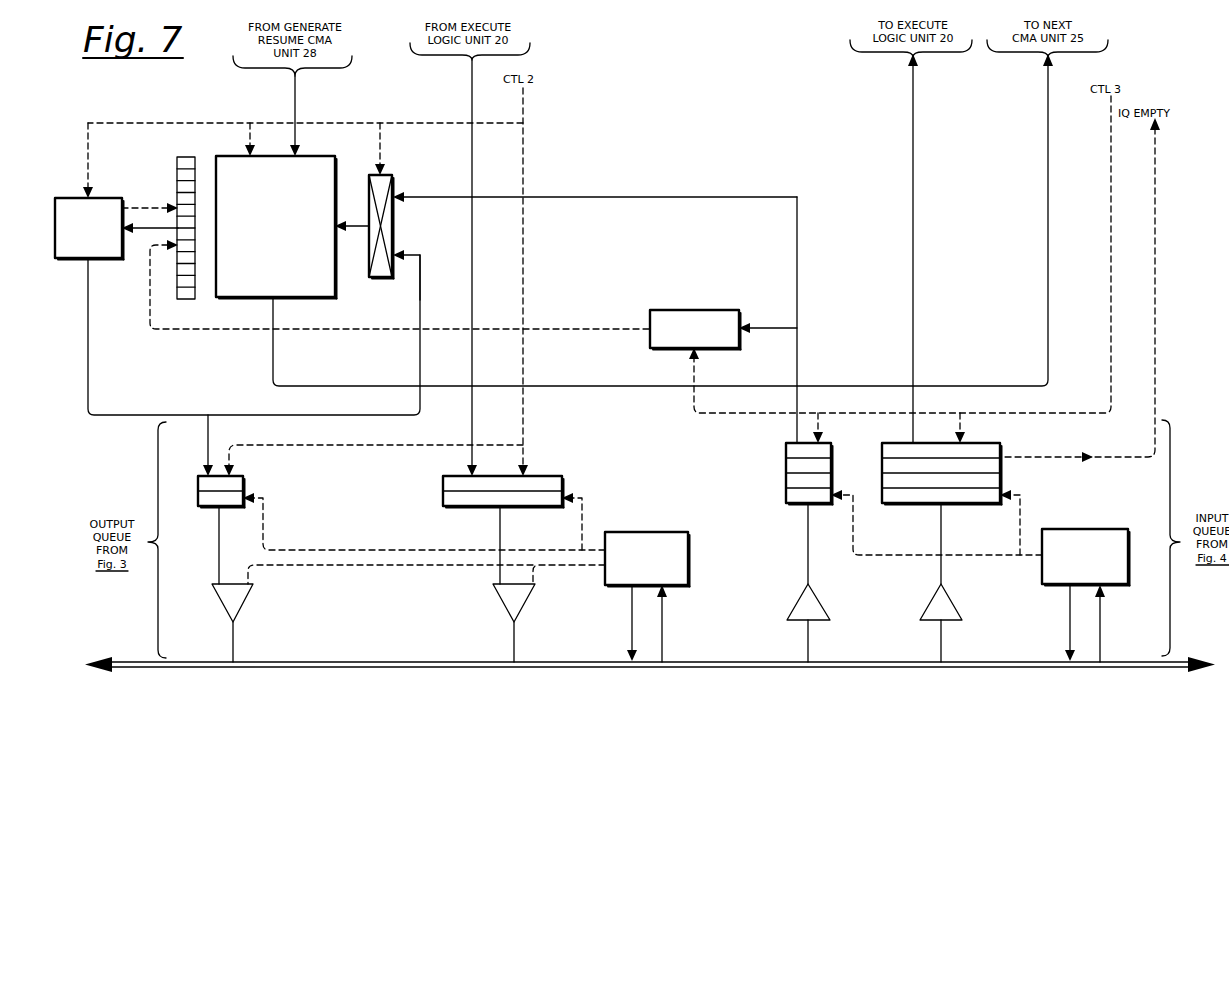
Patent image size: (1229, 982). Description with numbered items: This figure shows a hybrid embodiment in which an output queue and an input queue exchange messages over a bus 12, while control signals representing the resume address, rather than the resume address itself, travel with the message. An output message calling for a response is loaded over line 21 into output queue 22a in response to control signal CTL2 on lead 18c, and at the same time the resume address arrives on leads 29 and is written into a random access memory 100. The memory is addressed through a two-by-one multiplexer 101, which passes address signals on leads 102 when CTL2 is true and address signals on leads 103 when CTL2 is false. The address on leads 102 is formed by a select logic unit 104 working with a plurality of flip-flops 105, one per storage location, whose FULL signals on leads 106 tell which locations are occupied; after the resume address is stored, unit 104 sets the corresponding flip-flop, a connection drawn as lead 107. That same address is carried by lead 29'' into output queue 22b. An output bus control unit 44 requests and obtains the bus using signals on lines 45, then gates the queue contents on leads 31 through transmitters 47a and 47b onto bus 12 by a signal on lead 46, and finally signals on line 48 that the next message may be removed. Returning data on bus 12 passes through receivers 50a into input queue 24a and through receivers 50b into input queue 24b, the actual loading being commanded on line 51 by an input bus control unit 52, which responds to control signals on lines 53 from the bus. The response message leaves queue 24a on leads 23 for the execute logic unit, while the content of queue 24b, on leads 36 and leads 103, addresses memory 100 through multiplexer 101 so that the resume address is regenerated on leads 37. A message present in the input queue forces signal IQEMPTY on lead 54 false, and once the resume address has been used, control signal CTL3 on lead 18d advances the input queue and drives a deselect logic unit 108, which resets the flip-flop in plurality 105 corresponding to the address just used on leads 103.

The leads 29 is at (281, 116).
The line from execute logic unit 21 is at (472, 110).
The lead 18c is at (523, 112).
The leads 23 is at (913, 115).
The leads 37 is at (1048, 115).
The lead 18d is at (1111, 152).
The lead 54 is at (1155, 180).
The select logic unit 104 is at (71, 197).
The plurality of flip-flops 105 is at (178, 162).
The select logic output line 107 is at (126, 206).
The leads 106 is at (153, 226).
The random access memory 100 is at (336, 151).
The multiplexer 101 is at (380, 278).
The leads 103 is at (424, 198).
The leads 102 is at (420, 265).
The deselect logic unit 108 is at (694, 309).
The resume CMA output line 29'' is at (188, 445).
The output queue 22b is at (198, 502).
The output queue 22a is at (443, 505).
The line 48 is at (590, 548).
The lead 46 is at (574, 566).
The output bus control unit 44 is at (683, 531).
The lines 45 is at (630, 623).
The output lines 31 is at (219, 557).
The transmitter 47b is at (245, 607).
The transmitter 47a is at (500, 607).
The input queue 24b is at (786, 472).
The input queue 24a is at (882, 479).
The line 51 is at (1028, 556).
The input lines 36 is at (808, 559).
The receivers 50b is at (796, 608).
The receivers 50a is at (926, 608).
The input bus control unit 52 is at (1104, 529).
The lines 53 is at (1069, 624).
The bus 12 is at (212, 662).